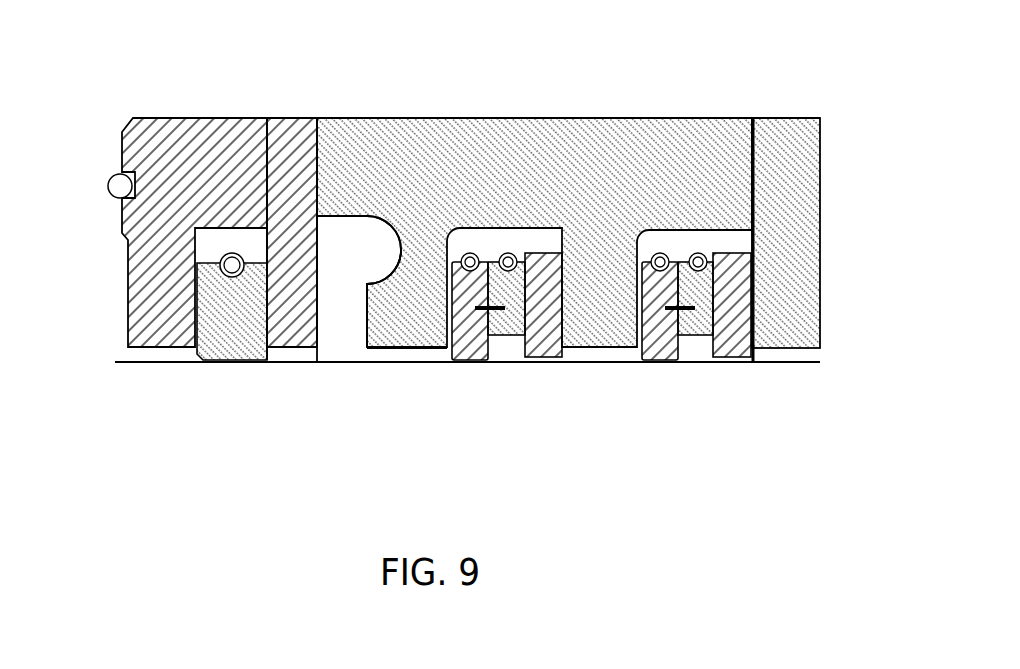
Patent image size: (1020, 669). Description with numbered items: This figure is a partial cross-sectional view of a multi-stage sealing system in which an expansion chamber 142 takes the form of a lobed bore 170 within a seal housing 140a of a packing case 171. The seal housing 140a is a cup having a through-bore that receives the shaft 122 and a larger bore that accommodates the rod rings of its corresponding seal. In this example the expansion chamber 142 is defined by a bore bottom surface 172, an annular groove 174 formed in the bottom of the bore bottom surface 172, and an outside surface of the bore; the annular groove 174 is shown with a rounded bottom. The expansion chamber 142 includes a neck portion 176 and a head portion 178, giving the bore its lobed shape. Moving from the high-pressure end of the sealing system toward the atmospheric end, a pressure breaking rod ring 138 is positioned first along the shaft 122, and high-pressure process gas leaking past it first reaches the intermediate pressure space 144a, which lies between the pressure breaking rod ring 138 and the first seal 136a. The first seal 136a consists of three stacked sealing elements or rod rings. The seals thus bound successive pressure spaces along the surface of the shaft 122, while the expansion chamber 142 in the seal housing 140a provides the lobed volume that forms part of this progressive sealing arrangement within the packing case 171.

The packing case 171 is at (142, 95).
The expansion chamber 142 is at (327, 237).
The lobed bore 170 is at (347, 253).
The seal housing 140a is at (452, 142).
The pressure breaking rod ring 138 is at (232, 313).
The shaft 122 is at (120, 358).
The head portion 178 is at (332, 277).
The neck portion 176 is at (333, 325).
The annular groove 174 is at (383, 252).
The bore bottom surface 172 is at (368, 327).
The intermediate pressure space 144a is at (385, 363).
The first seal 136a is at (542, 345).